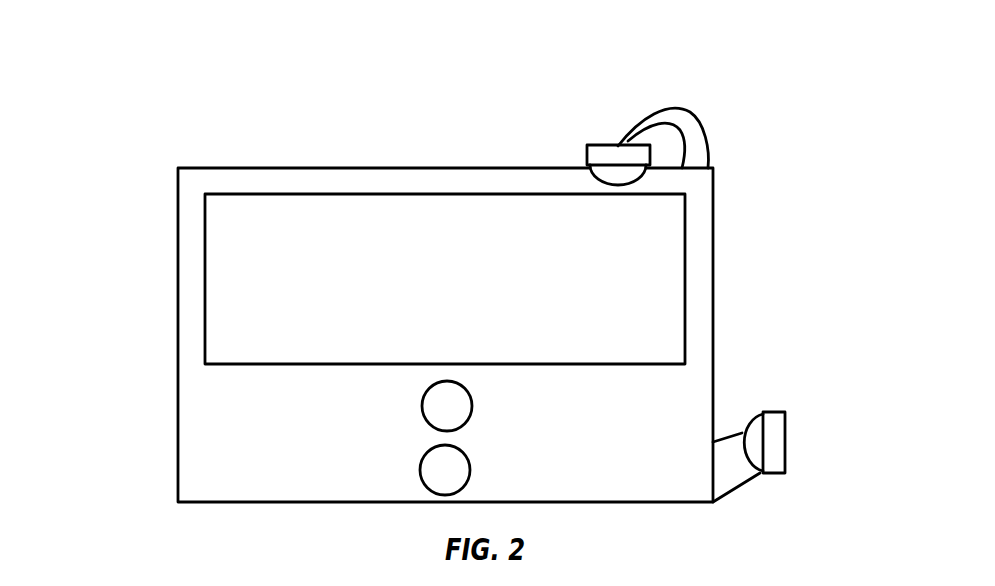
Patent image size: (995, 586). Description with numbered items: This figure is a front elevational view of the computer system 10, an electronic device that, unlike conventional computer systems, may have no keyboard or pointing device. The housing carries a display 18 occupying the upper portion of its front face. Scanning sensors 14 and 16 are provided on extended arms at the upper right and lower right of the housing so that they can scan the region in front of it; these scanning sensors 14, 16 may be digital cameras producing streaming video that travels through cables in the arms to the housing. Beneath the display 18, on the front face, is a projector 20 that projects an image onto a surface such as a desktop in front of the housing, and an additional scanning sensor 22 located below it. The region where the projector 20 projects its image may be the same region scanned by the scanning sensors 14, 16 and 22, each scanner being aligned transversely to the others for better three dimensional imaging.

The computer system 10 is at (150, 133).
The scanning sensor 14 is at (695, 92).
The scanning sensor 16 is at (790, 405).
The display 18 is at (365, 365).
The projector 20 is at (463, 385).
The additional scanning sensor 22 is at (462, 448).